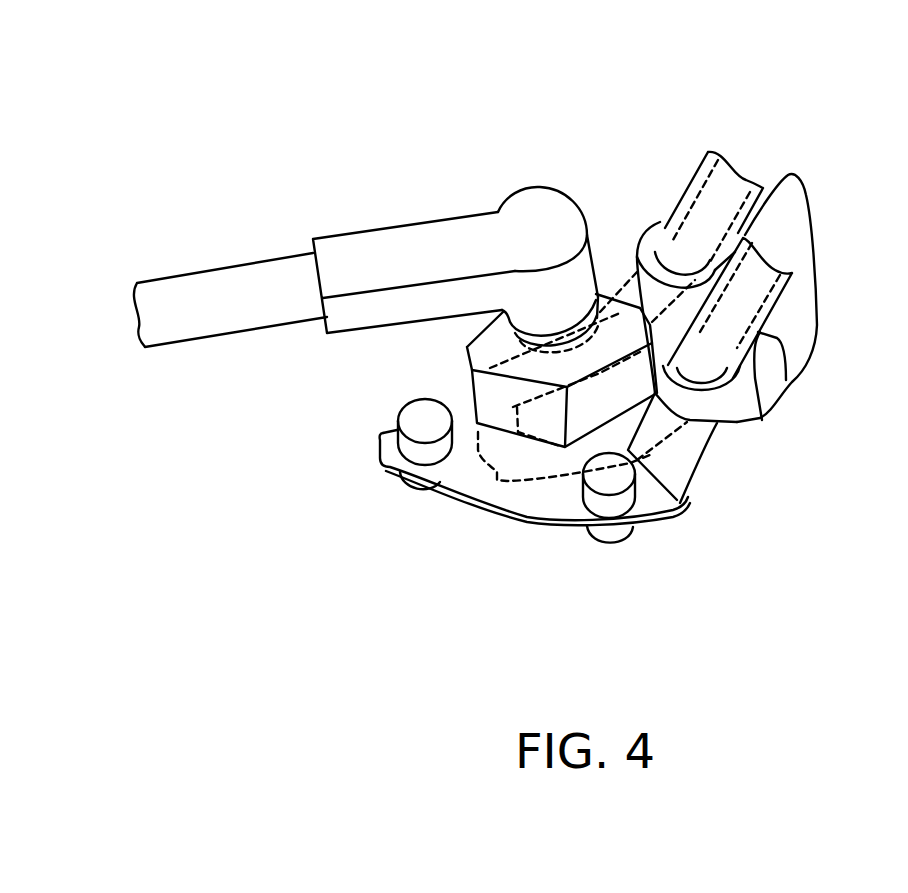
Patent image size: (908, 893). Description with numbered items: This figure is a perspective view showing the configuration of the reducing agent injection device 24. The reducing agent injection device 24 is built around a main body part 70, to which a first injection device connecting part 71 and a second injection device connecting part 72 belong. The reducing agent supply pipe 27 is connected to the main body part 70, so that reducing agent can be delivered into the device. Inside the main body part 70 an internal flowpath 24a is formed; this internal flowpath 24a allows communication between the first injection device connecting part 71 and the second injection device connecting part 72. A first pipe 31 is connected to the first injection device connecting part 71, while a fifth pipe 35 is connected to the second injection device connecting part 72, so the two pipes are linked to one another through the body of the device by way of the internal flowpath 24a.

The reducing agent injection device 24 is at (462, 165).
The internal flowpath 24a is at (497, 480).
The reducing agent supply pipe 27 is at (281, 260).
The first pipe 31 is at (688, 200).
The fifth pipe 35 is at (779, 376).
The main body part 70 is at (547, 520).
The first injection device connecting part 71 is at (667, 257).
The second injection device connecting part 72 is at (720, 426).